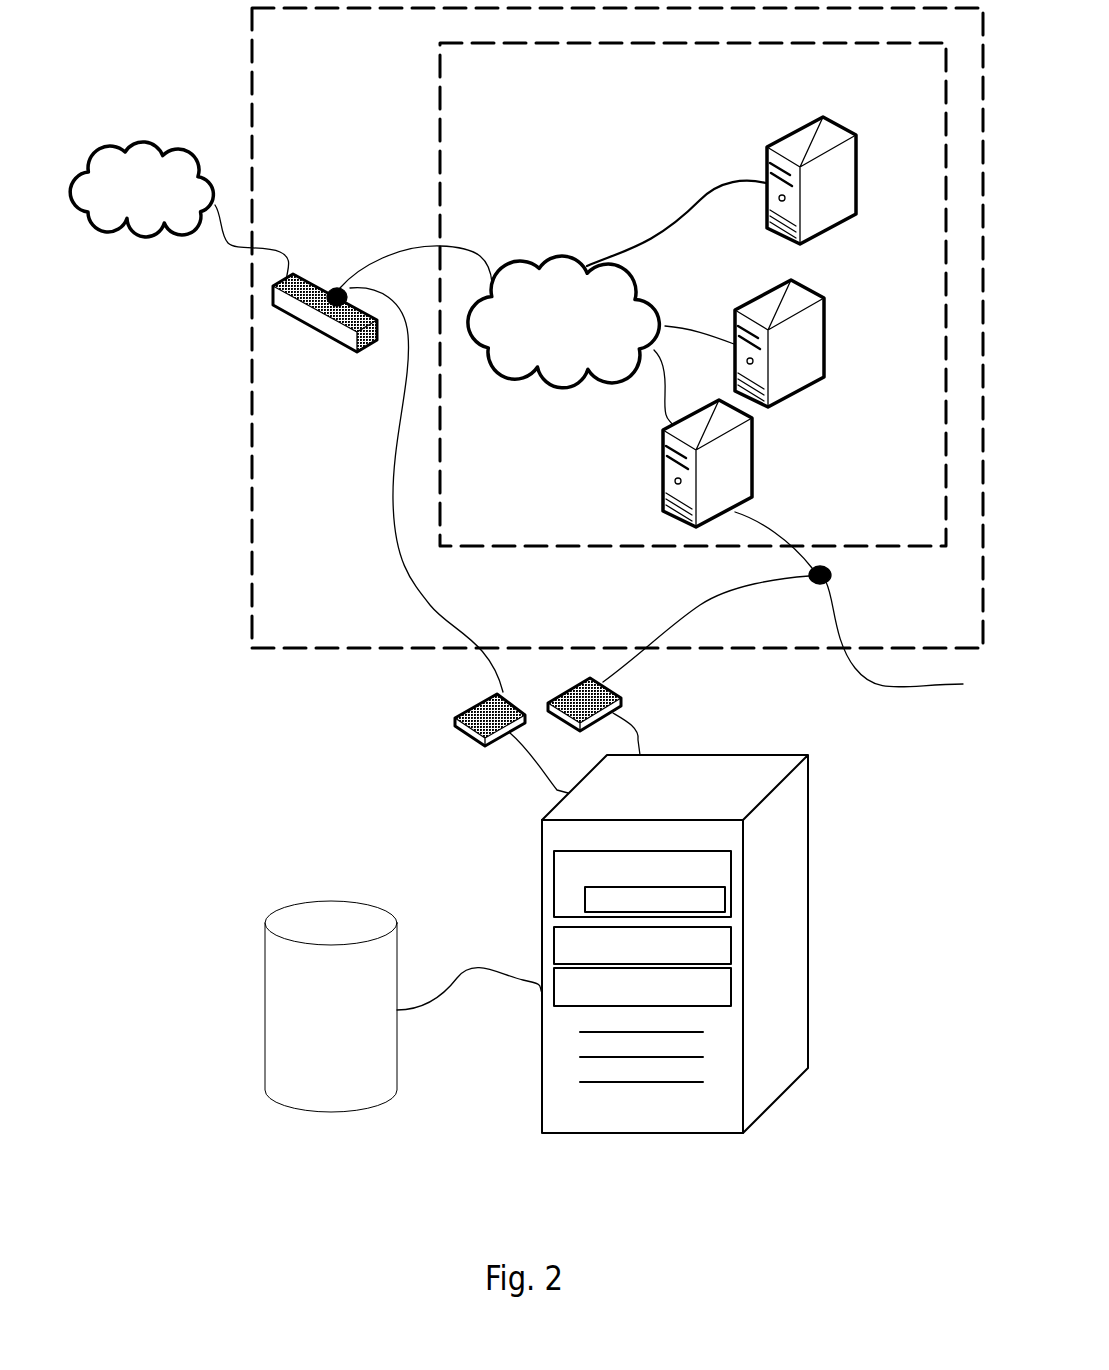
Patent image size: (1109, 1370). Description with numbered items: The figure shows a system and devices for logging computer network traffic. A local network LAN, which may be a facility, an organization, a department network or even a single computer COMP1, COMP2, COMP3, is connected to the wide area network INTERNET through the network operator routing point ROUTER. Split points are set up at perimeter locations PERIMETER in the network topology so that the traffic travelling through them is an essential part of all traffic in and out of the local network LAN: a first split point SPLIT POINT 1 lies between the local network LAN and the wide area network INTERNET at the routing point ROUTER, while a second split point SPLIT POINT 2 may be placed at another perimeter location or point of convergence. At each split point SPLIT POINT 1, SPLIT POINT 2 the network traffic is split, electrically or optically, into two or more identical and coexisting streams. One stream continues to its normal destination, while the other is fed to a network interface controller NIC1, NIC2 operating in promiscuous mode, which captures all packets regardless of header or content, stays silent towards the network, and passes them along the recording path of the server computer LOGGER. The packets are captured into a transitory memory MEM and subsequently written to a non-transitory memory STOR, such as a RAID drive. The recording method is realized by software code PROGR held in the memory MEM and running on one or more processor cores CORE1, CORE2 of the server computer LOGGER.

The perimeter location PERIMETER is at (617, 328).
The wide area network INTERNET is at (141, 205).
The network operator routing point ROUTER is at (325, 328).
The first split point SPLIT POINT 1 is at (337, 287).
The local network LAN is at (693, 294).
The first computer COMP1 is at (868, 142).
The second computer COMP2 is at (829, 308).
The third computer COMP3 is at (770, 462).
The second split point SPLIT POINT 2 is at (869, 587).
The first network interface controller NIC1 is at (490, 735).
The second network interface controller NIC2 is at (584, 720).
The server computer LOGGER is at (688, 913).
The transitory computer memory MEM is at (642, 884).
The software code PROGR is at (655, 898).
The first processor core CORE1 is at (642, 945).
The second processor core CORE2 is at (642, 987).
The non-transitory memory STOR is at (331, 1006).